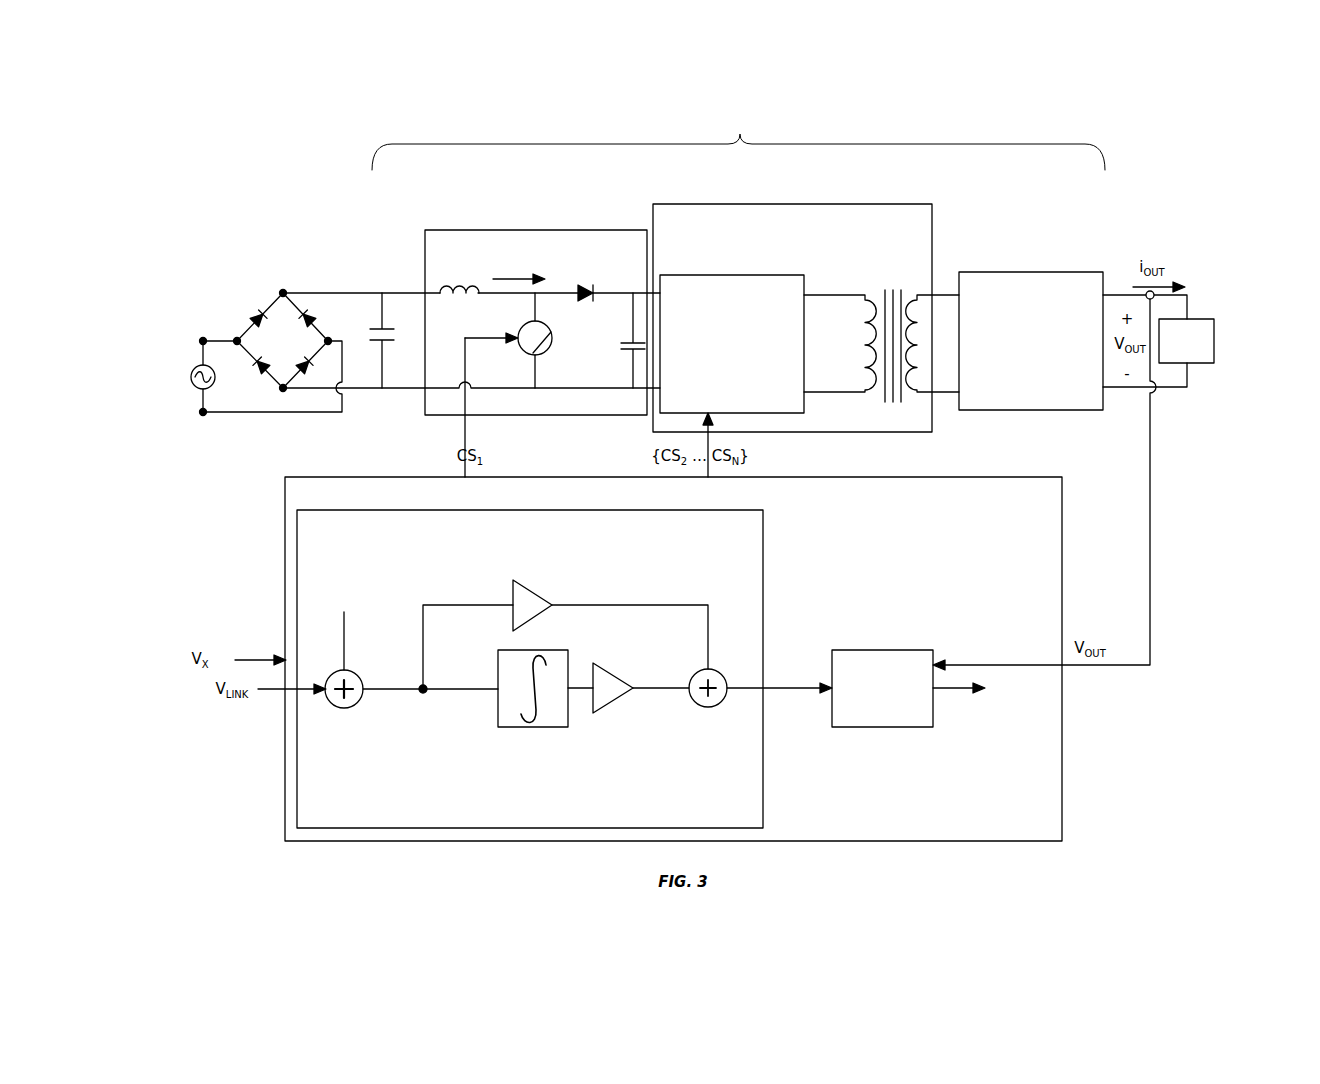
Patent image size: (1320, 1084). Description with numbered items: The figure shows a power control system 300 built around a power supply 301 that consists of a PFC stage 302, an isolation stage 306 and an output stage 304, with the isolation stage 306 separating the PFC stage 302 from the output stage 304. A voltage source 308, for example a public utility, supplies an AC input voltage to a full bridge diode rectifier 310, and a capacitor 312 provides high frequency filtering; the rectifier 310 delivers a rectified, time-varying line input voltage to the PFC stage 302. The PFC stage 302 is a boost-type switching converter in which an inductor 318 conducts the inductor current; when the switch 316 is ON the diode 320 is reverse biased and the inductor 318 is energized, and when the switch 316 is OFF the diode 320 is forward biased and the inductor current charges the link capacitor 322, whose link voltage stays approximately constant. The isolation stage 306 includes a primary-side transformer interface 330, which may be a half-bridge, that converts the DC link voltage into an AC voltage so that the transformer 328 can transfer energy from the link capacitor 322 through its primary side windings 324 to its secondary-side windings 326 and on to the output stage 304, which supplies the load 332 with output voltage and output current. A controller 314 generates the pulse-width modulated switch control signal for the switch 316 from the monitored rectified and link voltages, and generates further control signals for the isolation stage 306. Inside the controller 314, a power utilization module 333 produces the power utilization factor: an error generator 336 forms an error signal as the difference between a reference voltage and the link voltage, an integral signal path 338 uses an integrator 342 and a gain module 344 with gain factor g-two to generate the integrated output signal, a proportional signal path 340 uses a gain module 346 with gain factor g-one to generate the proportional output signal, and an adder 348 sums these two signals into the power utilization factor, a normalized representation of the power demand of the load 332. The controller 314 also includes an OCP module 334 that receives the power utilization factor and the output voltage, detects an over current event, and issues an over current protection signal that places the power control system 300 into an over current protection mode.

The power control system 300 is at (1117, 162).
The power supply 301 is at (738, 116).
The PFC stage 302 is at (542, 230).
The output stage 304 is at (1012, 272).
The isolation stage 306 is at (805, 204).
The voltage source 308 is at (191, 388).
The full bridge diode rectifier 310 is at (283, 341).
The capacitor 312 is at (382, 347).
The controller 314 is at (1062, 541).
The switch 316 is at (528, 356).
The inductor 318 is at (448, 289).
The diode 320 is at (592, 288).
The link capacitor 322 is at (628, 352).
The primary side windings 324 is at (858, 394).
The secondary-side windings 326 is at (926, 397).
The transformer 328 is at (889, 279).
The primary-side transformer interface 330 is at (700, 275).
The load 332 is at (1194, 318).
The power utilization module 333 is at (336, 829).
The OCP module 334 is at (863, 650).
The error generator 336 is at (343, 708).
The integral signal path 338 is at (425, 693).
The proportional signal path 340 is at (633, 605).
The integrator 342 is at (533, 728).
The gain module 344 is at (608, 708).
The gain module 346 is at (535, 588).
The adder 348 is at (715, 708).